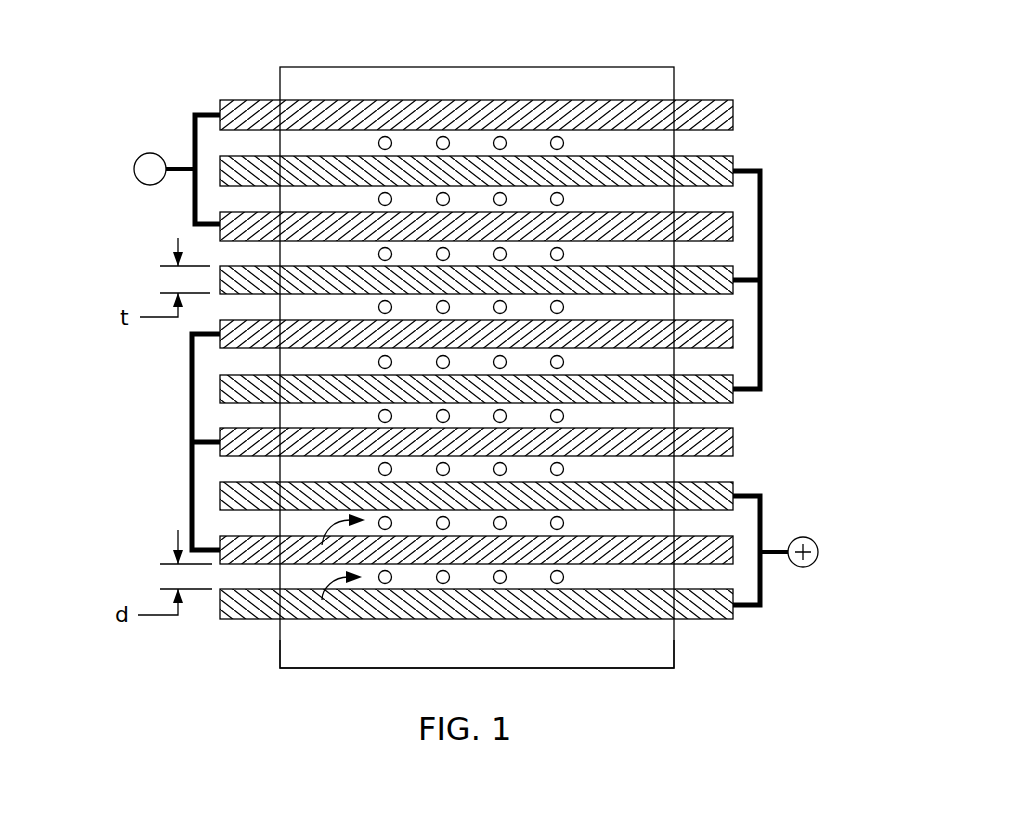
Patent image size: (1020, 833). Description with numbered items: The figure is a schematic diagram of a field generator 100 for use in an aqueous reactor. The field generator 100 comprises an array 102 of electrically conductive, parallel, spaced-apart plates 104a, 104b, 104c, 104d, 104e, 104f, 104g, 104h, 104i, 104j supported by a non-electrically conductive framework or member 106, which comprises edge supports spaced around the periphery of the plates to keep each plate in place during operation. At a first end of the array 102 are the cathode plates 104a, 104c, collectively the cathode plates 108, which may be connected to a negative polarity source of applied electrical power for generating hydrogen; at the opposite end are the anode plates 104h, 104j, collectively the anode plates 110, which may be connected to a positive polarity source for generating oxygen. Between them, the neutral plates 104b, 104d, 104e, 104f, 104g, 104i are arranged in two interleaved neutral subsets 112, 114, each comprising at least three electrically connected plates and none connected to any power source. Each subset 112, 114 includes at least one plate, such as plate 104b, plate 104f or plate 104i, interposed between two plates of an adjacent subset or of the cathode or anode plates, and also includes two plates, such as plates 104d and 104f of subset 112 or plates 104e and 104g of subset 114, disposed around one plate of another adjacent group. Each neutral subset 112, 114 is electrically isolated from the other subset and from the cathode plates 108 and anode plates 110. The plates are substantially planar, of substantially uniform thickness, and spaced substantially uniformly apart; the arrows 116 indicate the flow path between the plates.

The field generator 100 is at (882, 137).
The array 102 is at (256, 86).
The cathode plate 104a is at (738, 109).
The neutral plate 104b is at (738, 164).
The cathode plate 104c is at (738, 220).
The neutral plate 104d is at (738, 272).
The neutral plate 104e is at (738, 340).
The neutral plate 104f is at (738, 388).
The neutral plate 104g is at (738, 432).
The anode plate 104h is at (738, 488).
The neutral plate 104i is at (738, 538).
The anode plate 104j is at (736, 617).
The non-electrically conductive framework or member 106 is at (594, 668).
The cathode plates 108 is at (195, 113).
The anode plates 110 is at (762, 583).
The neutral subset 112 is at (762, 300).
The neutral subset 114 is at (192, 472).
The fluid flow path 116 is at (322, 600).